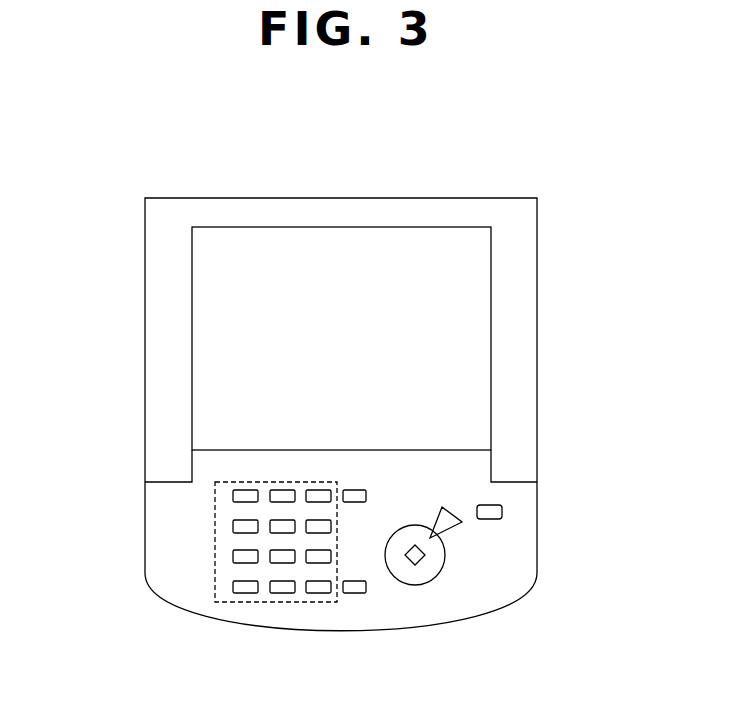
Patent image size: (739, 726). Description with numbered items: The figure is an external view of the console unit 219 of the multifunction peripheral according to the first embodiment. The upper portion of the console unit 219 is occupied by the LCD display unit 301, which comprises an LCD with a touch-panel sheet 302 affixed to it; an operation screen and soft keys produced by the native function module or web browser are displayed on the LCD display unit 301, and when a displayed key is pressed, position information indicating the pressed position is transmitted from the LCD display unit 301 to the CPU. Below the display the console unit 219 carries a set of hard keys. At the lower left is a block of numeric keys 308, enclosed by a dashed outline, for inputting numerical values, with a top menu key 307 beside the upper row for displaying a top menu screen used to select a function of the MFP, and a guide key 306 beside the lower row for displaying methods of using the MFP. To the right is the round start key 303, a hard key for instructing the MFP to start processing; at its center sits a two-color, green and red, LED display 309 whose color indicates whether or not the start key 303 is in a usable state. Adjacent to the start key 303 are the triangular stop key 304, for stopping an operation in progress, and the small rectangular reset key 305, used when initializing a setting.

The console unit 219 is at (358, 196).
The LCD display unit 301 is at (491, 253).
The touch-panel sheet 302 is at (460, 322).
The start key 303 is at (437, 558).
The stop key 304 is at (443, 506).
The reset key 305 is at (495, 512).
The guide key 306 is at (355, 594).
The top menu key 307 is at (355, 488).
The numeric keys 308 is at (228, 606).
The two-color LED display 309 is at (420, 563).